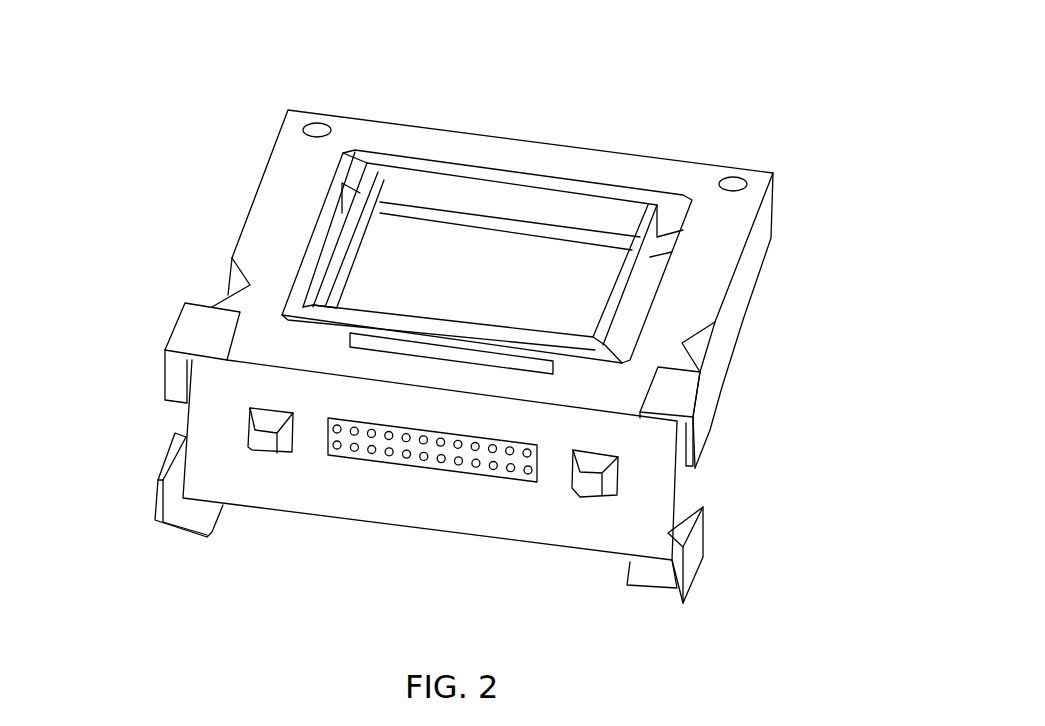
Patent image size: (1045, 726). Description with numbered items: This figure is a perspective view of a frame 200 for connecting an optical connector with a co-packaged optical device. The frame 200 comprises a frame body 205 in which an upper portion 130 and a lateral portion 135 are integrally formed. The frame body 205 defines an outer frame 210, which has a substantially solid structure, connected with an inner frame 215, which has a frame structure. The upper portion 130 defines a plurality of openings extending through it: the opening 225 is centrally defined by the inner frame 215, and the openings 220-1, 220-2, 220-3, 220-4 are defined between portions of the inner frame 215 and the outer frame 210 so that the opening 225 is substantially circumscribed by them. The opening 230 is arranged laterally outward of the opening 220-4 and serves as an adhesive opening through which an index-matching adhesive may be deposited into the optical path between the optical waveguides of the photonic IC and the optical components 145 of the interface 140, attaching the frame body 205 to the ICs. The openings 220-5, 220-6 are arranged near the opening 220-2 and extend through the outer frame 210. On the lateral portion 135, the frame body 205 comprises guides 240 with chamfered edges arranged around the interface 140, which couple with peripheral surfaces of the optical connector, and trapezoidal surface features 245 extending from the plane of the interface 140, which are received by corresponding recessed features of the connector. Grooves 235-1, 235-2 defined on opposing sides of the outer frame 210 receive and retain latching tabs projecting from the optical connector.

The frame 200 is at (778, 120).
The upper portion 130 is at (480, 118).
The lateral portion 135 is at (254, 344).
The interface 140 is at (662, 492).
The optical component(s) 145 is at (422, 484).
The frame body 205 is at (780, 232).
The outer frame 210 is at (664, 172).
The inner frame 215 is at (522, 180).
The opening 220-1 is at (322, 232).
The opening 220-2 is at (402, 158).
The opening 220-3 is at (662, 267).
The opening 220-4 is at (329, 311).
The opening 220-5 is at (312, 124).
The opening 220-6 is at (748, 182).
The opening 225 is at (464, 281).
The adhesive opening 230 is at (346, 347).
The groove 235-1 is at (214, 285).
The groove 235-2 is at (716, 352).
The guides 240 is at (157, 525).
The surface features 245 is at (270, 457).